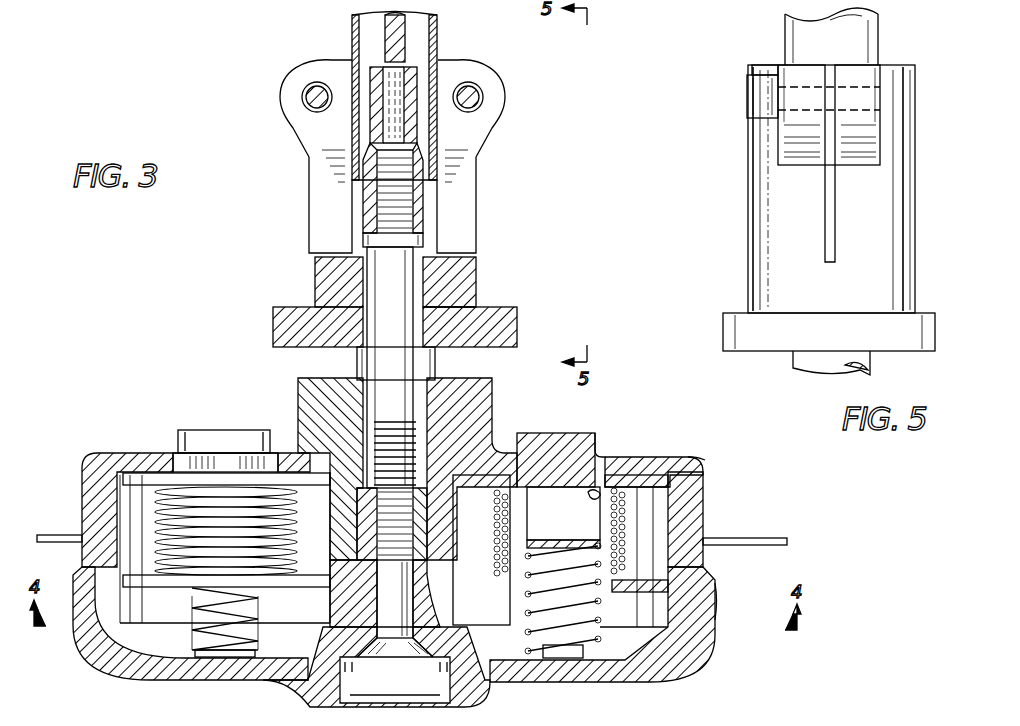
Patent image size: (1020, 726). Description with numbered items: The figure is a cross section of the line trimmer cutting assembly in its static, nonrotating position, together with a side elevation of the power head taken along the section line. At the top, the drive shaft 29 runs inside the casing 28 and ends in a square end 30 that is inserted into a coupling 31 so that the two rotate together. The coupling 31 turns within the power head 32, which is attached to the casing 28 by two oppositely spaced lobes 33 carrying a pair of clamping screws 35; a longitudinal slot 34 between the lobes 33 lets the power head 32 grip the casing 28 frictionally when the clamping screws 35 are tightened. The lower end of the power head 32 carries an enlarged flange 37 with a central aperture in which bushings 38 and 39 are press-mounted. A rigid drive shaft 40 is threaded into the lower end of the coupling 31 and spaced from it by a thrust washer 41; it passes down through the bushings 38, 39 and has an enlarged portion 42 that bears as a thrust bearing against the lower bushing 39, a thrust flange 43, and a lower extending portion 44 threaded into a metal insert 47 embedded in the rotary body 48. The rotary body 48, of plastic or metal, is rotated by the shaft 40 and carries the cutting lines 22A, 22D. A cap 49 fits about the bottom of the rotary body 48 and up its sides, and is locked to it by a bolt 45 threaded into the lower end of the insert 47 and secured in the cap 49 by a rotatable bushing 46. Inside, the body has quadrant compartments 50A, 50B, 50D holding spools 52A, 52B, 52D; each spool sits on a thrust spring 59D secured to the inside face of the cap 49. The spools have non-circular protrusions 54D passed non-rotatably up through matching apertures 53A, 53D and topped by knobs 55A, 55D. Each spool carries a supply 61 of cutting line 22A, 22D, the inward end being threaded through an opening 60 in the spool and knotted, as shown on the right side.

In FIG. 3, the cutting line 22A is at (770, 531).
In FIG. 3, the cutting line 22D is at (48, 534).
In FIG. 3, the casing 28 is at (440, 22).
In FIG. 5, the casing 28 is at (880, 30).
In FIG. 3, the drive shaft 29 is at (385, 31).
In FIG. 3, the square end 30 is at (400, 90).
In FIG. 3, the coupling 31 is at (425, 155).
In FIG. 3, the power head 32 is at (478, 213).
In FIG. 5, the power head 32 is at (748, 233).
In FIG. 3, the lobes 33 is at (294, 122).
In FIG. 5, the lobes 33 is at (872, 128).
In FIG. 5, the longitudinal slot 34 is at (830, 244).
In FIG. 3, the clamping screws 35 is at (308, 88).
In FIG. 5, the clamping screws 35 is at (747, 101).
In FIG. 3, the enlarged flange 37 is at (518, 325).
In FIG. 5, the enlarged flange 37 is at (723, 330).
In FIG. 3, the bushing 38 is at (430, 280).
In FIG. 3, the bushing 39 is at (430, 315).
In FIG. 3, the rigid drive shaft 40 is at (370, 270).
In FIG. 3, the thrust washer 41 is at (365, 240).
In FIG. 3, the enlarged portion 42 is at (360, 362).
In FIG. 5, the enlarged portion 42 is at (793, 366).
In FIG. 3, the thrust flange 43 is at (488, 392).
In FIG. 3, the lower extending portion 44 is at (405, 398).
In FIG. 3, the bolt 45 is at (400, 612).
In FIG. 3, the rotatable bushing 46 is at (427, 573).
In FIG. 3, the metal insert 47 is at (417, 455).
In FIG. 3, the rotary body 48 is at (705, 462).
In FIG. 3, the cap 49 is at (693, 652).
In FIG. 3, the compartment 50A is at (662, 528).
In FIG. 3, the compartment 50B is at (573, 690).
In FIG. 3, the compartment 50D is at (127, 503).
In FIG. 3, the spool 52A is at (605, 462).
In FIG. 3, the spool 52B is at (396, 694).
In FIG. 3, the spool 52D is at (178, 448).
In FIG. 3, the aperture 53A is at (612, 468).
In FIG. 3, the aperture 53D is at (170, 458).
In FIG. 3, the protrusion 54D is at (250, 460).
In FIG. 3, the knob 55A is at (575, 433).
In FIG. 3, the knob 55D is at (206, 430).
In FIG. 3, the thrust spring 59D is at (200, 660).
In FIG. 3, the opening 60 is at (598, 506).
In FIG. 3, the supply of cutting line 61 is at (272, 520).